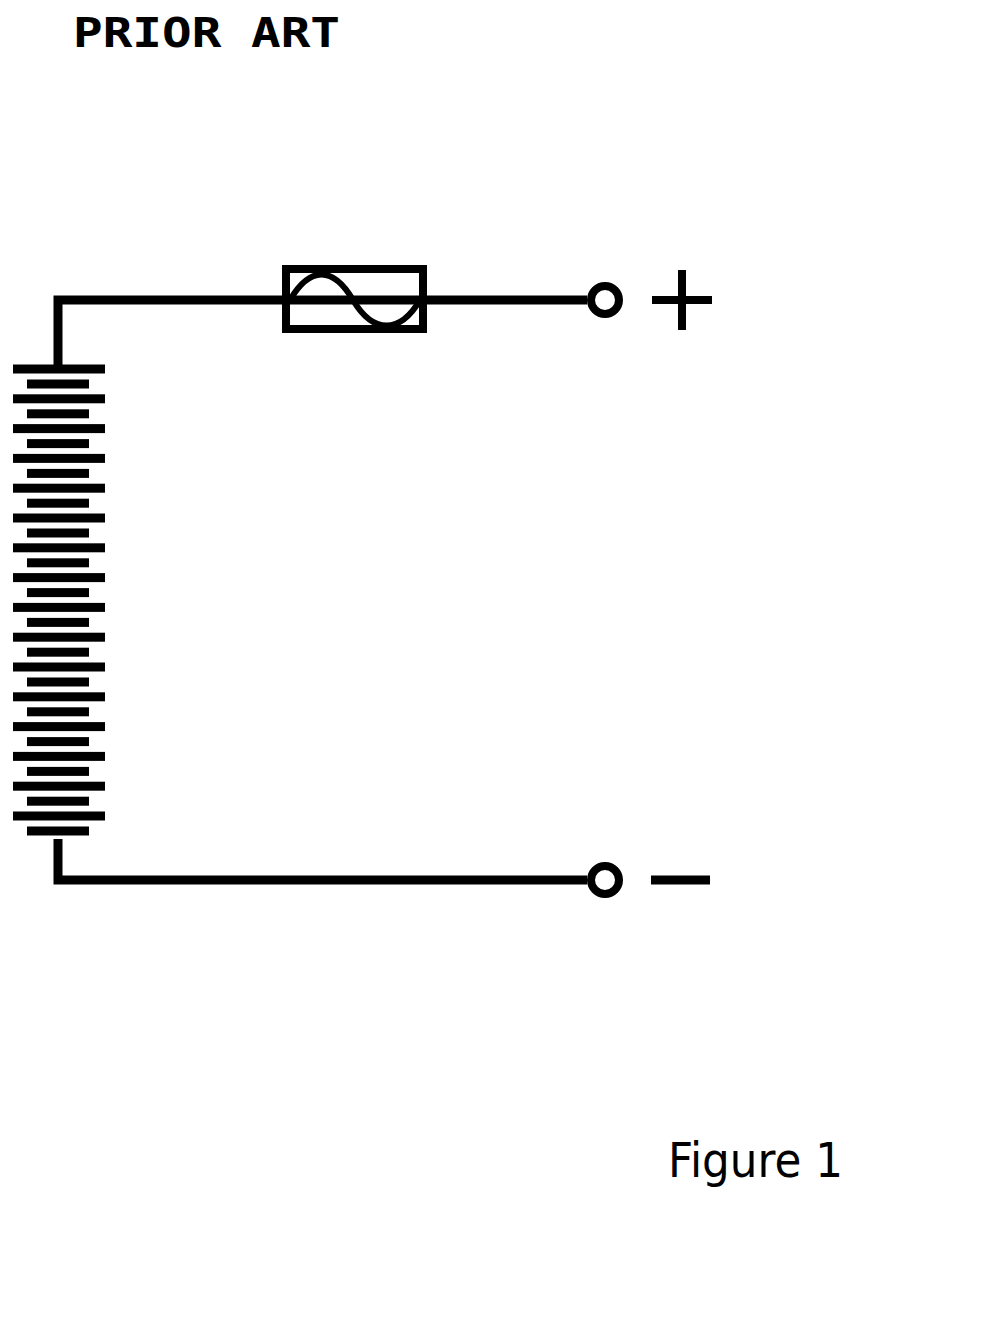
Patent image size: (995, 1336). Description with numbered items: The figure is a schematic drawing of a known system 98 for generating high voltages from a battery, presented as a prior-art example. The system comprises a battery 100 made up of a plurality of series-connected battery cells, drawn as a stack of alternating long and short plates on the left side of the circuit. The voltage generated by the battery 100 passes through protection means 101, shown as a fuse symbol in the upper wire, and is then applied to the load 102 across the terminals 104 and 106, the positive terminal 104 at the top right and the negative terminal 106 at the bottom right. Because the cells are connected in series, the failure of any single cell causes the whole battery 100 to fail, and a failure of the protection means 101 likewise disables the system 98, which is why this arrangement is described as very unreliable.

The known system 98 is at (213, 988).
The battery 100 is at (135, 717).
The protection means 101 is at (363, 240).
The load 102 is at (725, 568).
The terminal 104 is at (605, 282).
The terminal 106 is at (616, 913).